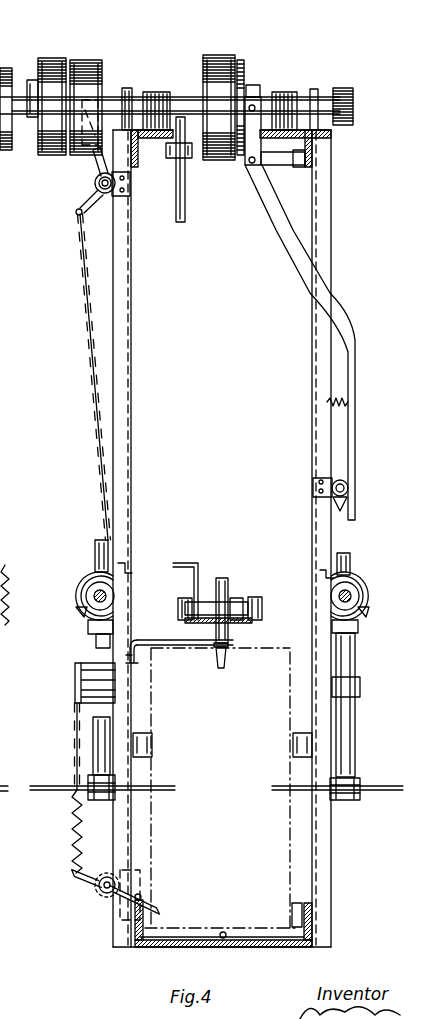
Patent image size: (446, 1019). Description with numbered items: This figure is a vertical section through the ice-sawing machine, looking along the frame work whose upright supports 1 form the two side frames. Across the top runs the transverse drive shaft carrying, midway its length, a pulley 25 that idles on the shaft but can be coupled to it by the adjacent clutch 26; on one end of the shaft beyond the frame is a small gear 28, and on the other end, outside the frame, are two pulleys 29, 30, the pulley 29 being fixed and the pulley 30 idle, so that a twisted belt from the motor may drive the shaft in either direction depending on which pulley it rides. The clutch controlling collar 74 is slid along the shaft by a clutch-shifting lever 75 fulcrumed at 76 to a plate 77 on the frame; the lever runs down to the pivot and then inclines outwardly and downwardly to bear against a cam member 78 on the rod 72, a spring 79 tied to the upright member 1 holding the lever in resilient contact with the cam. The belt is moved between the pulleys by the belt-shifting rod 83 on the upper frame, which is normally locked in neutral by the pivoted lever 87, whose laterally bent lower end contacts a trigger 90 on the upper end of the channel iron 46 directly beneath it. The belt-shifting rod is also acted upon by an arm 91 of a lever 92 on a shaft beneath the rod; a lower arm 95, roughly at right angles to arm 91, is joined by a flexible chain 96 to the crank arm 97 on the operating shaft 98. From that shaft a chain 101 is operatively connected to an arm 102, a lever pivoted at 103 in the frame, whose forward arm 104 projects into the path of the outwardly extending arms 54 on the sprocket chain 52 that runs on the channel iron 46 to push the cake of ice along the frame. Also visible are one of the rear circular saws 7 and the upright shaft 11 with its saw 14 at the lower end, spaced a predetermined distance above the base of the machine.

The upright supports 1 is at (325, 256).
The circular saw 7 is at (8, 569).
The upright shaft 11 is at (354, 656).
The saw 14 is at (174, 790).
The pulley 25 is at (203, 64).
The clutch 26 is at (240, 64).
The small gear 28 is at (354, 101).
The pulley 29 is at (100, 63).
The pulley 30 is at (58, 58).
The channel iron 46 is at (254, 598).
The chain 52 is at (229, 582).
The outwardly extending arm 54 is at (227, 659).
The rod 72 is at (347, 482).
The clutch controlling collar 74 is at (253, 92).
The clutch-shifting lever 75 is at (282, 238).
The fulcrum 76 is at (248, 164).
The plate 77 is at (284, 166).
The cam member 78 is at (348, 497).
The spring 79 is at (350, 401).
The belt-shifting rod 83 is at (28, 92).
The lever 87 is at (177, 203).
The trigger 90 is at (184, 563).
The arm 91 is at (95, 161).
The lever 92 is at (94, 182).
The lower arm 95 is at (81, 202).
The flexible chain 96 is at (85, 265).
The crank arm 97 is at (142, 897).
The operating shaft 98 is at (102, 896).
The chain 101 is at (75, 743).
The arm 102 is at (92, 664).
The pivot 103 is at (131, 648).
The forward arm 104 is at (183, 646).